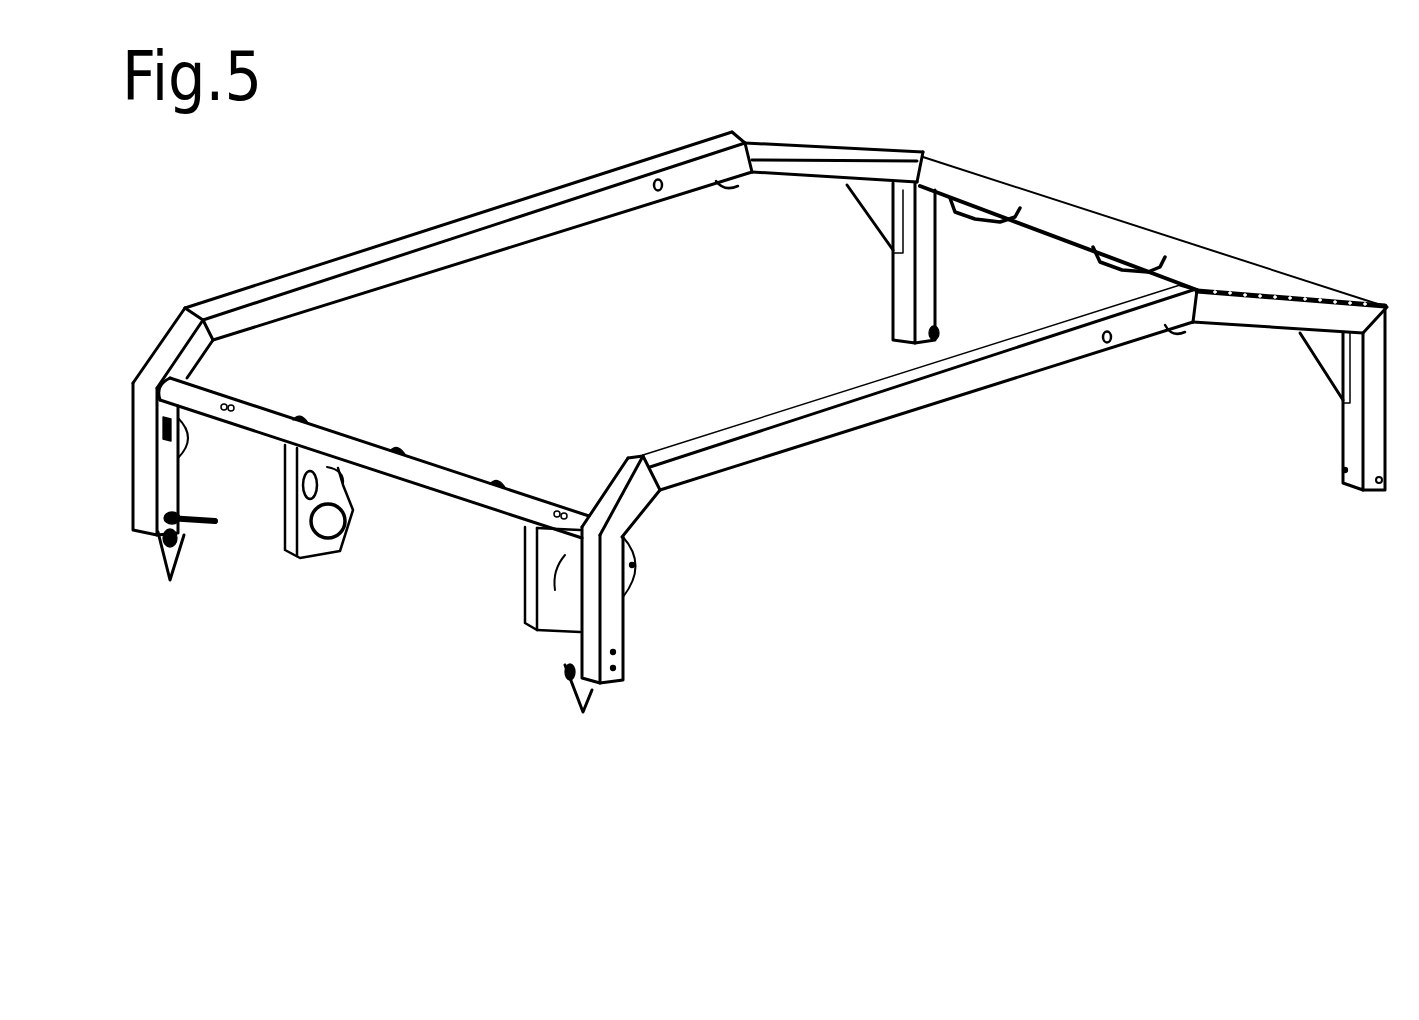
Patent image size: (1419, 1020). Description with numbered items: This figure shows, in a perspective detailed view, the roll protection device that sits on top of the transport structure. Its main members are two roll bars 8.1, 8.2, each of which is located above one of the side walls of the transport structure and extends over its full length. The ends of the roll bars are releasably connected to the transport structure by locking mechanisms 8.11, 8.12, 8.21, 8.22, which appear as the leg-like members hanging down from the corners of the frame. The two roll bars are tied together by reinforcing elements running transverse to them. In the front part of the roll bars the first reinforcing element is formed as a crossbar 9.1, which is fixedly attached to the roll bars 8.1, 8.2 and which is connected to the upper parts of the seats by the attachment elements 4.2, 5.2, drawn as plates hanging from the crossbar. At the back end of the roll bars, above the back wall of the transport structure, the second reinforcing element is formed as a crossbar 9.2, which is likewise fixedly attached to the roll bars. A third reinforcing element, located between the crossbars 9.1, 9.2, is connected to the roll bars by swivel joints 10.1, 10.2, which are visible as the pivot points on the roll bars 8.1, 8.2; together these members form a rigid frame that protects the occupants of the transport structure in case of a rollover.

The roll bar 8.2 is at (282, 205).
The swivel joint 10.2 is at (650, 177).
The locking mechanism 8.22 is at (932, 337).
The crossbar 9.2 is at (1168, 252).
The crossbar 9.1 is at (418, 478).
The swivel joint 10.1 is at (1107, 343).
The roll bar 8.1 is at (877, 408).
The locking mechanism 8.12 is at (1380, 495).
The locking mechanism 8.21 is at (175, 562).
The attachment element 5.2 is at (319, 560).
The attachment element 4.2 is at (535, 633).
The locking mechanism 8.11 is at (623, 680).